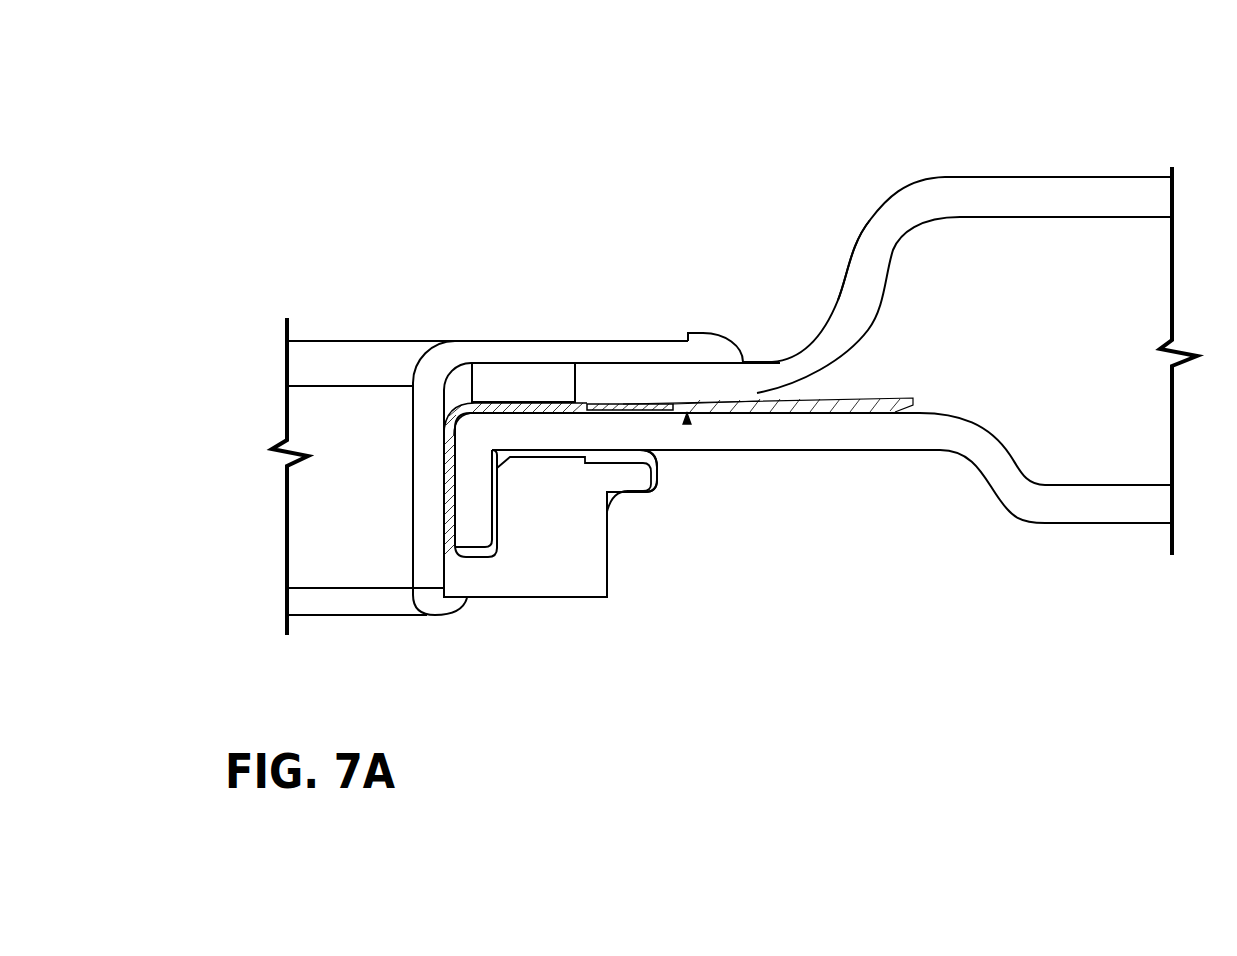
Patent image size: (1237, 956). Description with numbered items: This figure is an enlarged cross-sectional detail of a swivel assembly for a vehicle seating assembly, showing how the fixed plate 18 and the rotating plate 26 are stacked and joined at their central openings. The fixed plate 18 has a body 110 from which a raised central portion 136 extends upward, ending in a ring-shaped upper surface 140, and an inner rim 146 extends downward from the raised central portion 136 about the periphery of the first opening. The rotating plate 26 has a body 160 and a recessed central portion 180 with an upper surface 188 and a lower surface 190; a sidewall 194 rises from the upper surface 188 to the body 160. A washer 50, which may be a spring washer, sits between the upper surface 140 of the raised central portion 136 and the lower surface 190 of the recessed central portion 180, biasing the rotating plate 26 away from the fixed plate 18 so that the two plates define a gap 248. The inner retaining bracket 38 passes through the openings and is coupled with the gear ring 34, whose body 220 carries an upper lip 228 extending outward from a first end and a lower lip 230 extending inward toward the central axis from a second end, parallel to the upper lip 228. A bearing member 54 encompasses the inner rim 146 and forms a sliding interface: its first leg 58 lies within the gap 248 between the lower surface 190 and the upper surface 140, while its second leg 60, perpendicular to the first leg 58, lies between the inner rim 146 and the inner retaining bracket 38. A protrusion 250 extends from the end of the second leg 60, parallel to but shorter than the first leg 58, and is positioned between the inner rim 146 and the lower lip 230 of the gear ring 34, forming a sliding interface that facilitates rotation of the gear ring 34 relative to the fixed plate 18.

The fixed plate 18 is at (1013, 500).
The rotating plate 26 is at (957, 183).
The gear ring 34 is at (572, 575).
The inner retaining bracket 38 is at (535, 355).
The washer 50 is at (718, 420).
The bearing member 54 is at (445, 493).
The first leg 58 is at (505, 405).
The second leg 60 is at (445, 530).
The body 110 is at (1127, 508).
The raised central portion 136 is at (723, 433).
The upper surface 140 is at (747, 412).
The inner rim 146 is at (472, 527).
The body 160 is at (1106, 190).
The recessed central portion 180 is at (553, 385).
The upper surface 188 is at (595, 362).
The lower surface 190 is at (605, 398).
The sidewall 194 is at (851, 283).
The body 220 is at (555, 510).
The upper lip 228 is at (628, 480).
The lower lip 230 is at (455, 588).
The gap 248 is at (688, 422).
The protrusion 250 is at (488, 560).